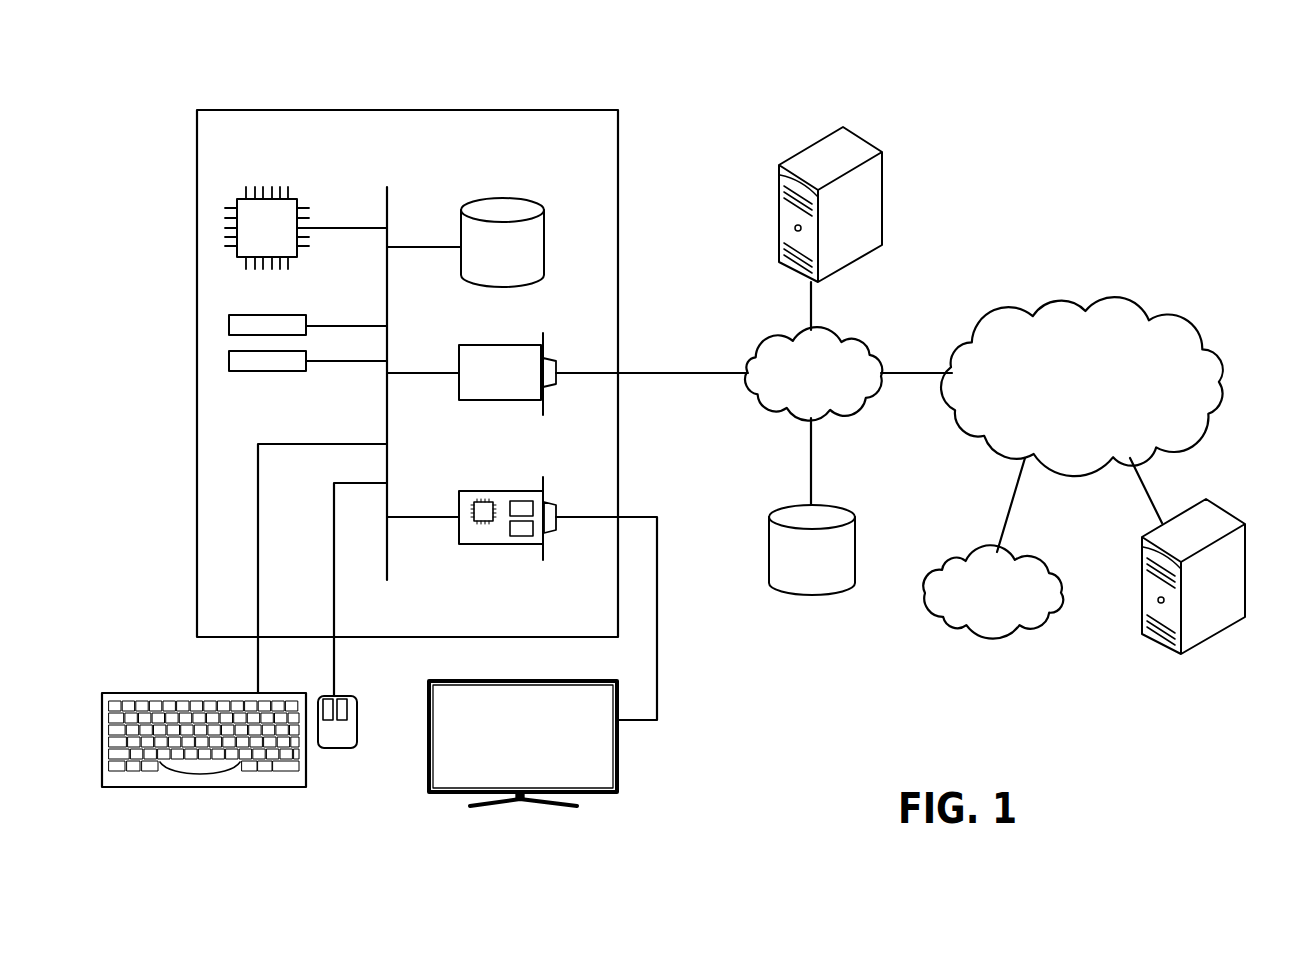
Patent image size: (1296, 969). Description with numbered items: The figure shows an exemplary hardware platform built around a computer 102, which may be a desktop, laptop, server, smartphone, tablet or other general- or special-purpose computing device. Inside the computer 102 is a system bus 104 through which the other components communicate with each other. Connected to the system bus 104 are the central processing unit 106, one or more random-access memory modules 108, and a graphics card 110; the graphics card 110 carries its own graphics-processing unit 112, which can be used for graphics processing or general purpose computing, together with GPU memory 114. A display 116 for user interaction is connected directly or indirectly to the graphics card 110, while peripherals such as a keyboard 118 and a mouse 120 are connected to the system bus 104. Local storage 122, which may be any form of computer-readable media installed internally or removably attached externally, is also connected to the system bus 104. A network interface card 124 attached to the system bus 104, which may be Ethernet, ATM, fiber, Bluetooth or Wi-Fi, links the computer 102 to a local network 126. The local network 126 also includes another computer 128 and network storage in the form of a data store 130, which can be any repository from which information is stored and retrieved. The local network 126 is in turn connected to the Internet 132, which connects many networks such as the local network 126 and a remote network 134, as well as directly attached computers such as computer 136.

The computer 102 is at (572, 110).
The system bus 104 is at (388, 200).
The central processing unit 106 is at (289, 197).
The random-access memory modules 108 is at (307, 357).
The graphics card 110 is at (522, 581).
The graphics-processing unit 112 is at (482, 527).
The GPU memory 114 is at (518, 537).
The display 116 is at (619, 773).
The keyboard 118 is at (205, 787).
The mouse 120 is at (333, 750).
The local storage 122 is at (546, 228).
The network interface card 124 is at (458, 357).
The local network 126 is at (865, 330).
The computer 128 is at (865, 140).
The data store 130 is at (844, 508).
The Internet 132 is at (1127, 292).
The remote network 134 is at (1047, 550).
The computer 136 is at (1222, 503).